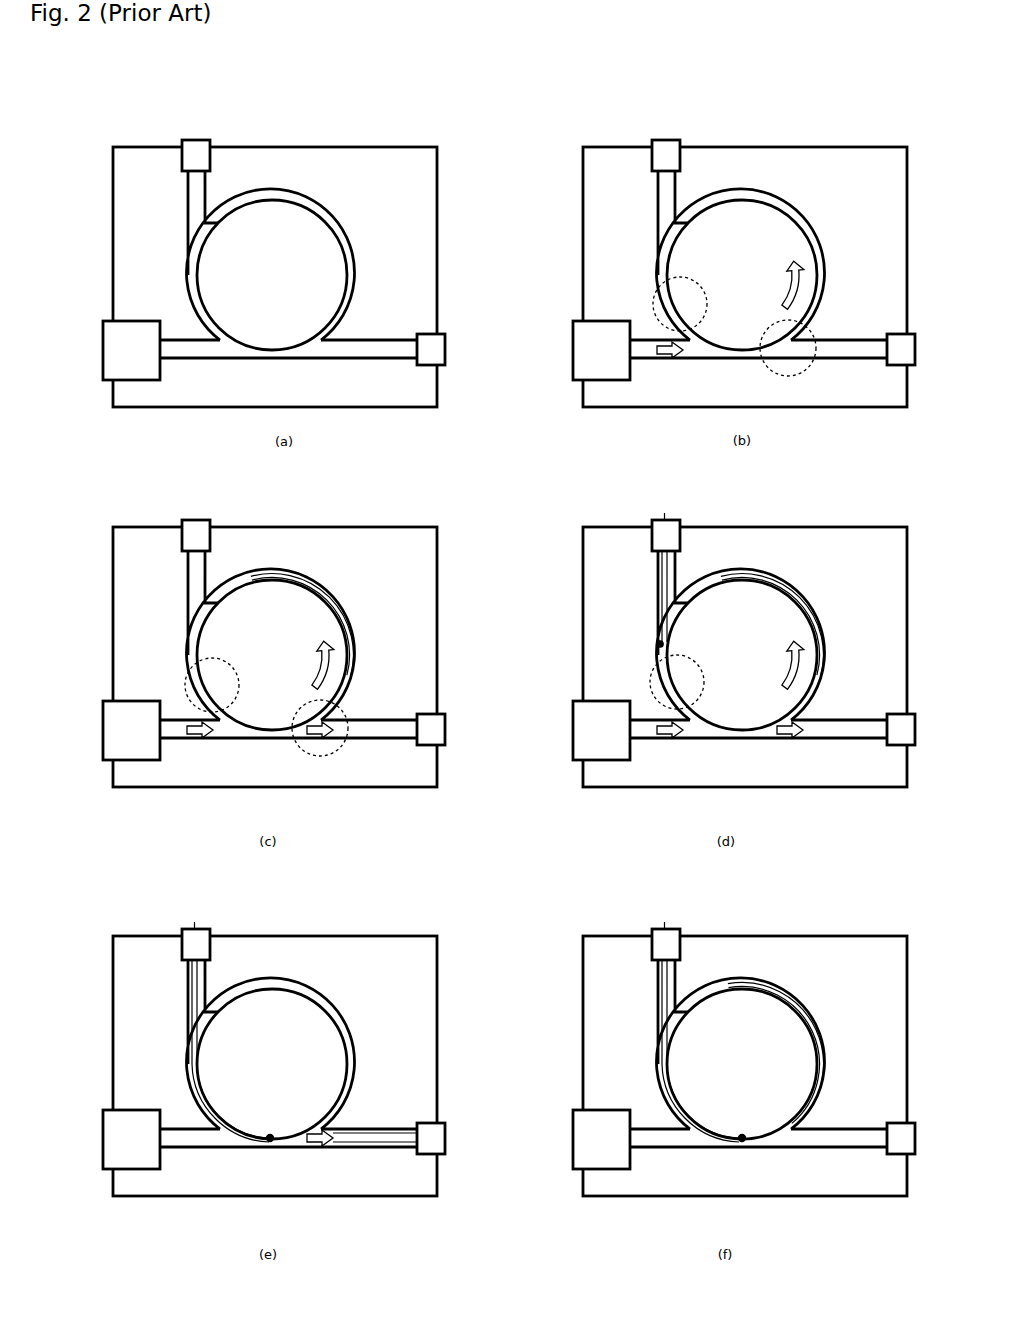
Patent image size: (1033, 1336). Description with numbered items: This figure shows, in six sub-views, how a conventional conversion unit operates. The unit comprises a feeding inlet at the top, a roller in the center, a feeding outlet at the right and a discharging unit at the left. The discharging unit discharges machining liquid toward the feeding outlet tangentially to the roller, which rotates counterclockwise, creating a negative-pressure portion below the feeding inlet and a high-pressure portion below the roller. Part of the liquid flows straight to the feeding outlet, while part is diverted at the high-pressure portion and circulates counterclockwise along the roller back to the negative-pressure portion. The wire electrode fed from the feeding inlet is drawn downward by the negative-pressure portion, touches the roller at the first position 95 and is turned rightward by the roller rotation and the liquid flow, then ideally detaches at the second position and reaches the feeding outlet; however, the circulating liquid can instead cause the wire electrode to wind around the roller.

The first position 95 is at (603, 615).